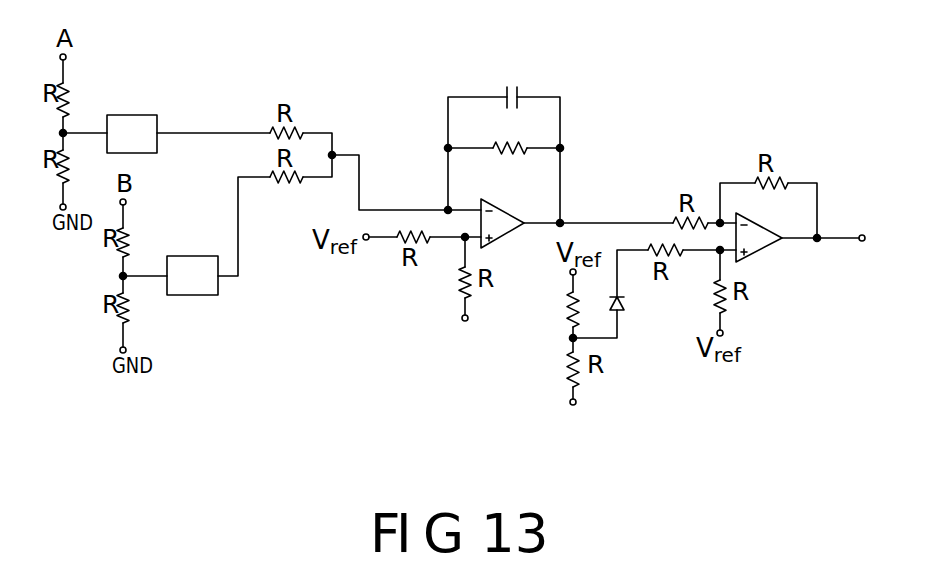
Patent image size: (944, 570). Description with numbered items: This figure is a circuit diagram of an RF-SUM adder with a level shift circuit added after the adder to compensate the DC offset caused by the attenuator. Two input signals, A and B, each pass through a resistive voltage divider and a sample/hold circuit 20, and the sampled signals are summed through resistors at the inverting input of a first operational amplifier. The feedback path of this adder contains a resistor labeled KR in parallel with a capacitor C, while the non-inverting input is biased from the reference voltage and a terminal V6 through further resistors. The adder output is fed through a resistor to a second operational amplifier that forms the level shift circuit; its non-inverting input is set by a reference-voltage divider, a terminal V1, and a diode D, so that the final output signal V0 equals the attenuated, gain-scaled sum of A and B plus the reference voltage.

The sample/hold circuit 20 is at (133, 115).
The capacitor C is at (509, 83).
The feedback resistor KR is at (510, 133).
The diode D is at (630, 304).
The voltage input V6 is at (469, 336).
The voltage input V1 is at (577, 418).
The output signal Vo V0 is at (878, 235).